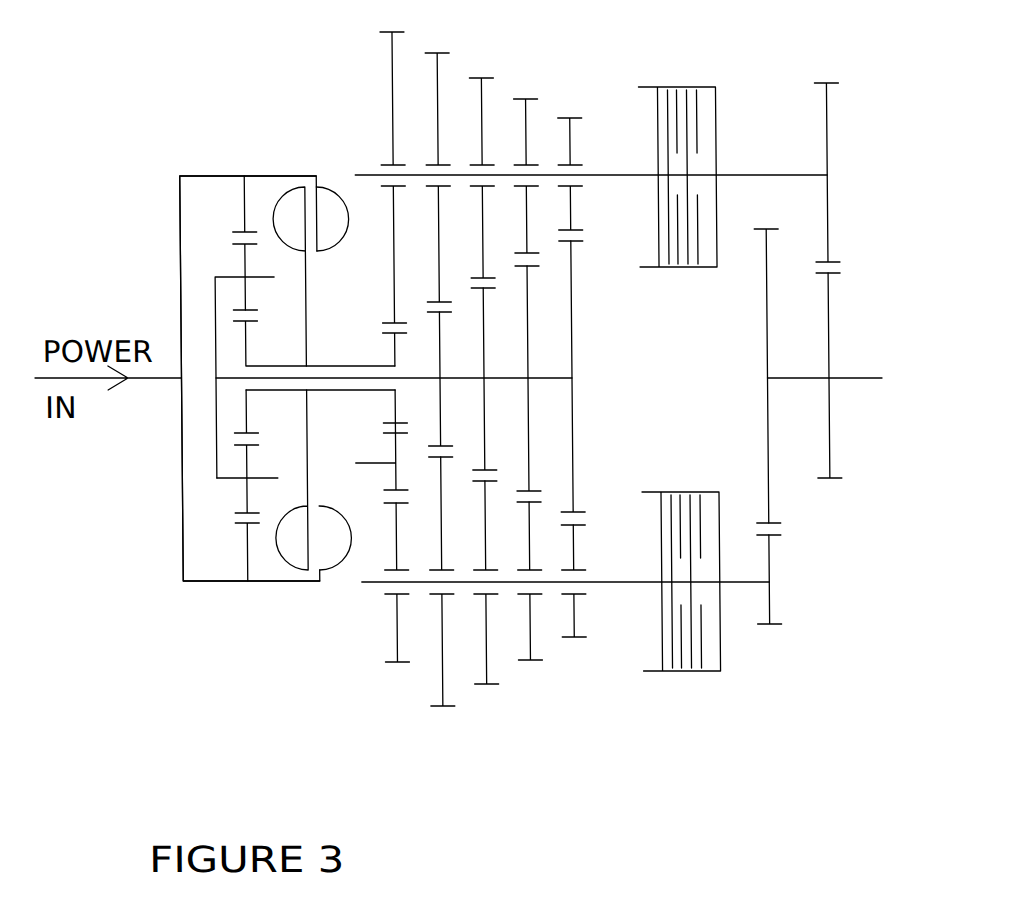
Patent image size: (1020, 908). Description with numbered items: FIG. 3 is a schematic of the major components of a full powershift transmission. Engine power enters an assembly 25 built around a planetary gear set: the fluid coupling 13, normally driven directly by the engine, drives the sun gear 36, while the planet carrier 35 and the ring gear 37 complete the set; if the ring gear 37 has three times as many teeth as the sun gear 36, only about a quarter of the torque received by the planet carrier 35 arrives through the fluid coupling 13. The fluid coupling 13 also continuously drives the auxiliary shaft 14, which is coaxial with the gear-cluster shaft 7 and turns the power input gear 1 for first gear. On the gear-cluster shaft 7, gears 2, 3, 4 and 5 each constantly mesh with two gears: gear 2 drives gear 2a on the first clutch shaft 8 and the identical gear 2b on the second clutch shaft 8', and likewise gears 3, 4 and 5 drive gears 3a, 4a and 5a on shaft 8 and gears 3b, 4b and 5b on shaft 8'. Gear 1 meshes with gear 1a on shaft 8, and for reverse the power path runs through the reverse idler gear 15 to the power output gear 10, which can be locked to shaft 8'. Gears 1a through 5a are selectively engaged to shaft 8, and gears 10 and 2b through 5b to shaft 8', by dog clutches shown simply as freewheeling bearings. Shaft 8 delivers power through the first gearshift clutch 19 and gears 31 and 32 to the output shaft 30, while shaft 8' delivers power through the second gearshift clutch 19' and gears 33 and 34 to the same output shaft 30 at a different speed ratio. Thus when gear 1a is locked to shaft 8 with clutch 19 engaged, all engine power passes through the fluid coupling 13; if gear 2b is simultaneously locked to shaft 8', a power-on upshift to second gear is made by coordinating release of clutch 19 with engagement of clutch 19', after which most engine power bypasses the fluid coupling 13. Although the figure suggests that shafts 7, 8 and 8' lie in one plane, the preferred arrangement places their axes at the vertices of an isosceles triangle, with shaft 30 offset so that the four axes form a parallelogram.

The gear 1 is at (395, 400).
The gear 1a is at (395, 52).
The gear 2 is at (440, 416).
The gear 2a is at (440, 73).
The gear 2b is at (440, 692).
The gear 3 is at (484, 430).
The gear 3a is at (484, 92).
The gear 3b is at (484, 670).
The gear 4 is at (528, 437).
The gear 4a is at (528, 115).
The gear 4b is at (528, 648).
The gear 5 is at (572, 438).
The gear 5a is at (572, 204).
The gear 5b is at (572, 620).
The gear-cluster shaft 7 is at (560, 378).
The first clutch shaft 8 is at (591, 154).
The second clutch shaft 8' is at (565, 560).
The reverse power output gear 10 is at (395, 646).
The fluid coupling 13 is at (338, 247).
The auxiliary shaft 14 is at (332, 365).
The reverse idler gear 15 is at (383, 478).
The first gearshift clutch 19 is at (677, 157).
The second gearshift clutch 19' is at (681, 560).
The assembly 25 is at (251, 133).
The transmission output shaft 30 is at (840, 378).
The gear 31 is at (829, 140).
The gear 32 is at (829, 326).
The gear 33 is at (768, 555).
The gear 34 is at (768, 492).
The planet carrier 35 is at (272, 450).
The sun gear 36 is at (258, 321).
The ring gear 37 is at (246, 232).